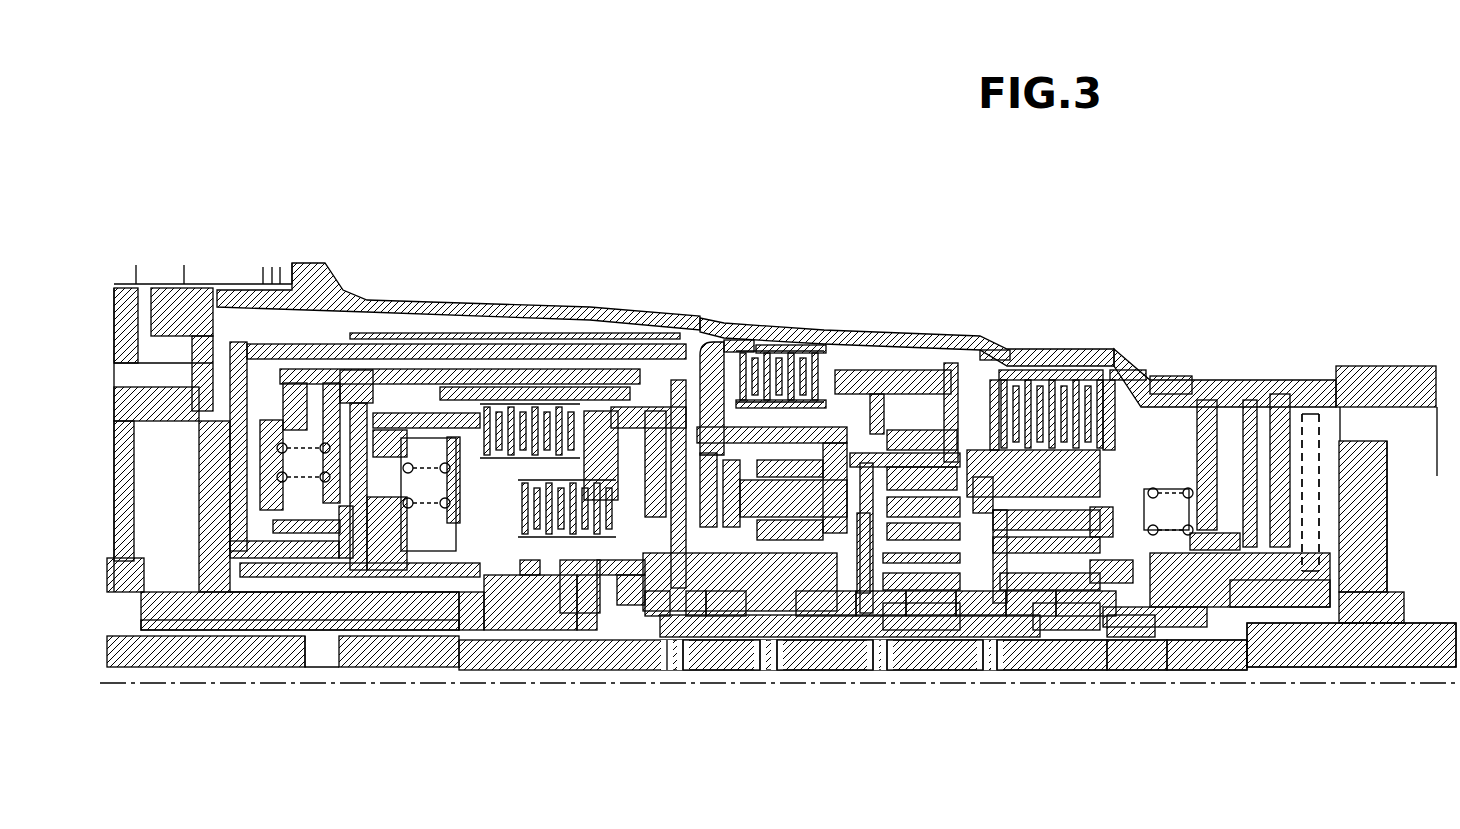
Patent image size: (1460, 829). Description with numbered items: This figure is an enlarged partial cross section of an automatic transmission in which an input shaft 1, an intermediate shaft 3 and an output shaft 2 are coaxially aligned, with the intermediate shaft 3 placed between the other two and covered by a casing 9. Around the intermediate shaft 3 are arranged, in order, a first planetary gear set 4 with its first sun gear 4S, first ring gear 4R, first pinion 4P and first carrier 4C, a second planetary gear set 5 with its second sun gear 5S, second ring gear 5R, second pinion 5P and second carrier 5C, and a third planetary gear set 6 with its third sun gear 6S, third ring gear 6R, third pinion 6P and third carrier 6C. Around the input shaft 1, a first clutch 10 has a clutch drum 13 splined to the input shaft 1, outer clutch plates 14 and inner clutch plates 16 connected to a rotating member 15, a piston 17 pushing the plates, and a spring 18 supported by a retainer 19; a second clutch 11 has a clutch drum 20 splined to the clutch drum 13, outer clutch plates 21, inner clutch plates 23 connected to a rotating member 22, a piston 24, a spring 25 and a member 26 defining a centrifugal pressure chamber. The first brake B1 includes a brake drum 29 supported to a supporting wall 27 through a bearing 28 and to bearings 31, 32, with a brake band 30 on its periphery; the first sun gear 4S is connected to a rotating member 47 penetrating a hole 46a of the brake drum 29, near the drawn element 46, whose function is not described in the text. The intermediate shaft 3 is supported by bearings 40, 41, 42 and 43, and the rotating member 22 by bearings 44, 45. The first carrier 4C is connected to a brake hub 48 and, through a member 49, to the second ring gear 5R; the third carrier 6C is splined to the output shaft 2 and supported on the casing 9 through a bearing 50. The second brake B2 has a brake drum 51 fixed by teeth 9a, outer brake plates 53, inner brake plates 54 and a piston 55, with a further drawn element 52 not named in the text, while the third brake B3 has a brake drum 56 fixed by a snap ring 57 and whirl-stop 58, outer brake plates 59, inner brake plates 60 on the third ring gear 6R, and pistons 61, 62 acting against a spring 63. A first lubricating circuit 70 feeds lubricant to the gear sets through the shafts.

The input shaft 1 is at (167, 683).
The output shaft 2 is at (1350, 667).
The intermediate shaft 3 is at (1050, 645).
The first planetary gear set 4 is at (966, 418).
The first ring gear 4R is at (878, 426).
The first sun gear 4S is at (750, 670).
The first pinion 4P is at (775, 630).
The first carrier 4C is at (800, 640).
The second planetary gear set 5 is at (1045, 445).
The second ring gear 5R is at (955, 640).
The second sun gear 5S is at (915, 670).
The second pinion 5P is at (890, 630).
The second carrier 5C is at (860, 645).
The third planetary gear set 6 is at (1140, 462).
The third ring gear 6R is at (1062, 400).
The third sun gear 6S is at (985, 655).
The third pinion 6P is at (1010, 640).
The third carrier 6C is at (1215, 645).
The casing 9 is at (1298, 378).
The teeth 9a is at (882, 392).
The first clutch 10 is at (488, 345).
The second clutch 11 is at (634, 345).
The clutch drum 13 is at (540, 620).
The outer clutch plates 14 is at (540, 345).
The rotating member 15 is at (605, 610).
The inner clutch plates 16 is at (555, 345).
The piston 17 is at (425, 345).
The spring 18 is at (390, 600).
The retainer 19 is at (430, 600).
The clutch drum 20 is at (562, 345).
The outer clutch plates 21 is at (618, 430).
The rotating member 22 is at (485, 600).
The inner clutch plates 23 is at (560, 630).
The piston 24 is at (343, 285).
The spring 25 is at (309, 290).
The member 26 is at (237, 292).
The supporting wall 27 is at (163, 292).
The bearing 28 is at (320, 600).
The brake drum 29 is at (217, 292).
The brake band 30 is at (250, 292).
The bearing 31 is at (665, 625).
The bearing 32 is at (720, 630).
The bearing 40 is at (523, 630).
The bearing 41 is at (1130, 645).
The bearing 42 is at (580, 620).
The bearing 43 is at (1100, 635).
The bearing 44 is at (690, 630).
The bearing 45 is at (830, 670).
The clutch drum of C2 46 is at (697, 320).
The hole 46a is at (647, 320).
The rotating member 47 is at (611, 345).
The brake hub 48 is at (735, 320).
The member 49 is at (968, 440).
The bearing 50 is at (1170, 660).
The brake drum 51 is at (990, 360).
The snap ring 52 is at (711, 320).
The outer brake plates 53 is at (829, 345).
The inner brake plates 54 is at (802, 345).
The piston 55 is at (1005, 372).
The brake drum 56 is at (1100, 380).
The snap ring 57 is at (1004, 430).
The whirl-stop 58 is at (1195, 387).
The outer brake plates 59 is at (1158, 378).
The inner brake plates 60 is at (1120, 372).
The piston 61 is at (1205, 388).
The piston 62 is at (1268, 364).
The spring 63 is at (1250, 620).
The first lubricating circuit 70 is at (630, 625).
The first brake B1 is at (363, 328).
The second brake B2 is at (856, 360).
The third brake B3 is at (1196, 398).